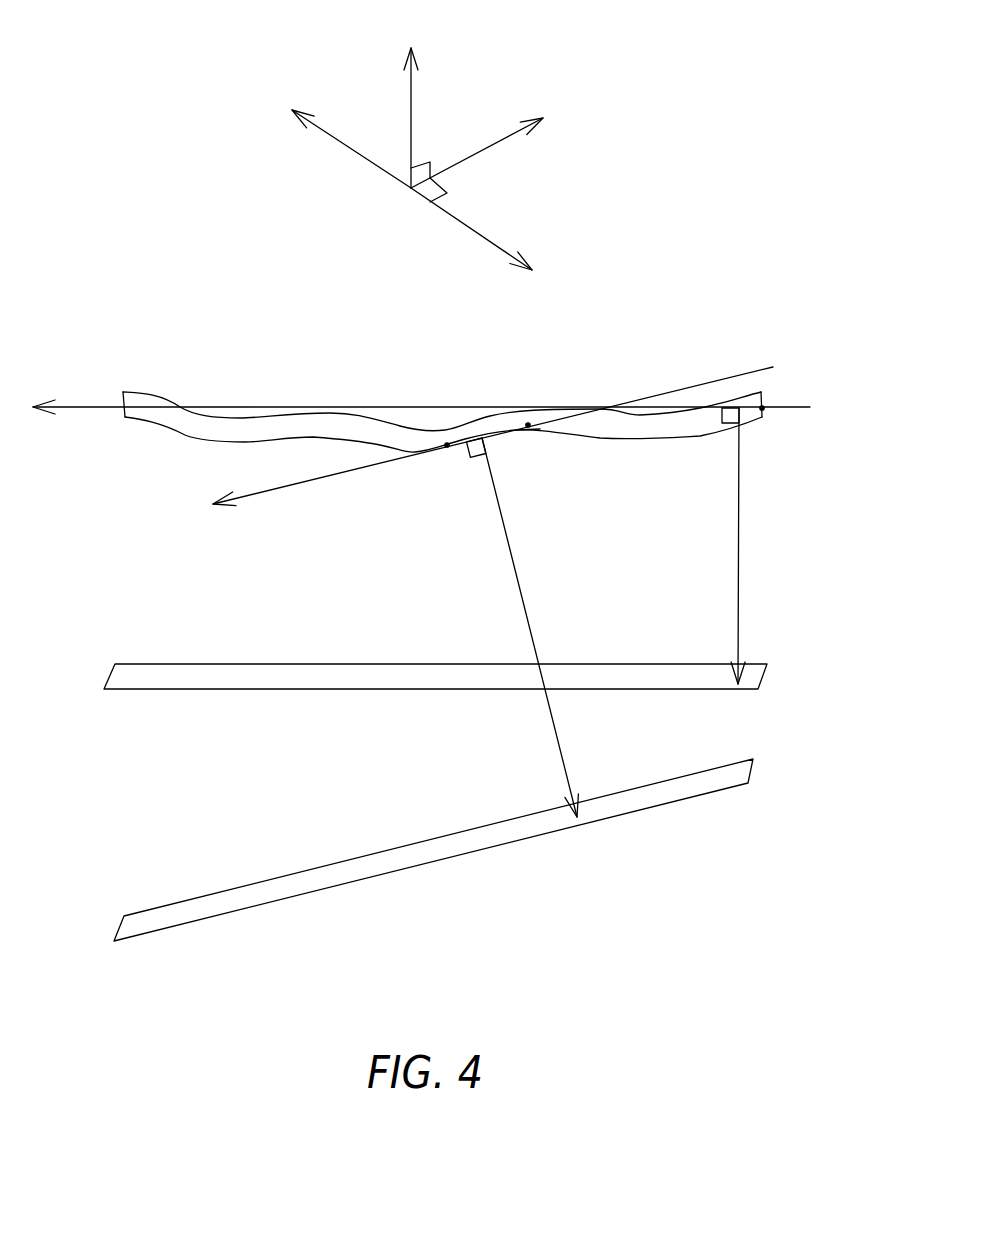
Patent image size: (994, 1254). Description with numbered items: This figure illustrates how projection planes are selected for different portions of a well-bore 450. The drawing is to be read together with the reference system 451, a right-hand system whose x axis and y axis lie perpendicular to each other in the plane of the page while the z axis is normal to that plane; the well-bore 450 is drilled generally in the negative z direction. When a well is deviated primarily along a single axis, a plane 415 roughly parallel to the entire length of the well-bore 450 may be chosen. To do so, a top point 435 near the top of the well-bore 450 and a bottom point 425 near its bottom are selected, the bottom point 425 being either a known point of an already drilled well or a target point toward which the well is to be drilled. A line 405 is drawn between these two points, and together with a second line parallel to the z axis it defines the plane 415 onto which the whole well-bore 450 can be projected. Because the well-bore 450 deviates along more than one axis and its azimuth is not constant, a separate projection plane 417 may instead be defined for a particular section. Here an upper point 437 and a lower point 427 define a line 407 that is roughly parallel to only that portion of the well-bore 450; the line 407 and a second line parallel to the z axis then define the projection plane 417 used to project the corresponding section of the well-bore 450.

The reference system 451 is at (360, 158).
The line 405 is at (441, 407).
The line 407 is at (511, 429).
The well-bore 450 is at (205, 433).
The bottom point 425 is at (125, 409).
The top point 435 is at (762, 409).
The lower point 427 is at (447, 445).
The upper point 437 is at (528, 425).
The plane 415 is at (760, 681).
The projection plane 417 is at (750, 772).